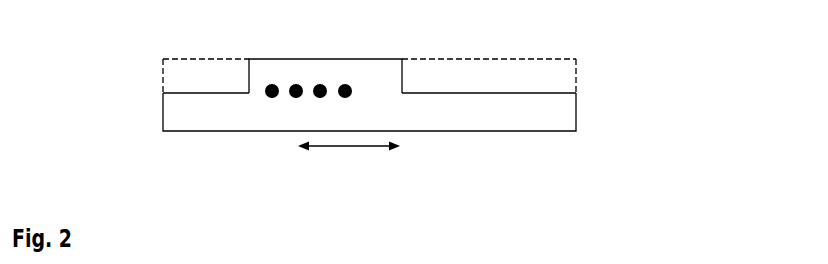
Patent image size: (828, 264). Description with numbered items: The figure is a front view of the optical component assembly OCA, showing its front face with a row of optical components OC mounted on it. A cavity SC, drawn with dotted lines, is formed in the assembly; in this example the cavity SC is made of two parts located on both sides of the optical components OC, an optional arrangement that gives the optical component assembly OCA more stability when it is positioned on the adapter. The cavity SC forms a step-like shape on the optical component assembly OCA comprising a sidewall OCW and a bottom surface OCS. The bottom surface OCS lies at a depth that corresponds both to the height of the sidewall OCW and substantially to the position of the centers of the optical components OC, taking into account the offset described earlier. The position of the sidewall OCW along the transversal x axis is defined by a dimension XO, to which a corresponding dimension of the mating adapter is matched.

The sidewall OCW is at (403, 70).
The cavity SC is at (490, 68).
The bottom surface OCS is at (550, 93).
The optical component assembly OCA is at (560, 120).
The optical components OC is at (278, 95).
The dimension XO is at (349, 158).